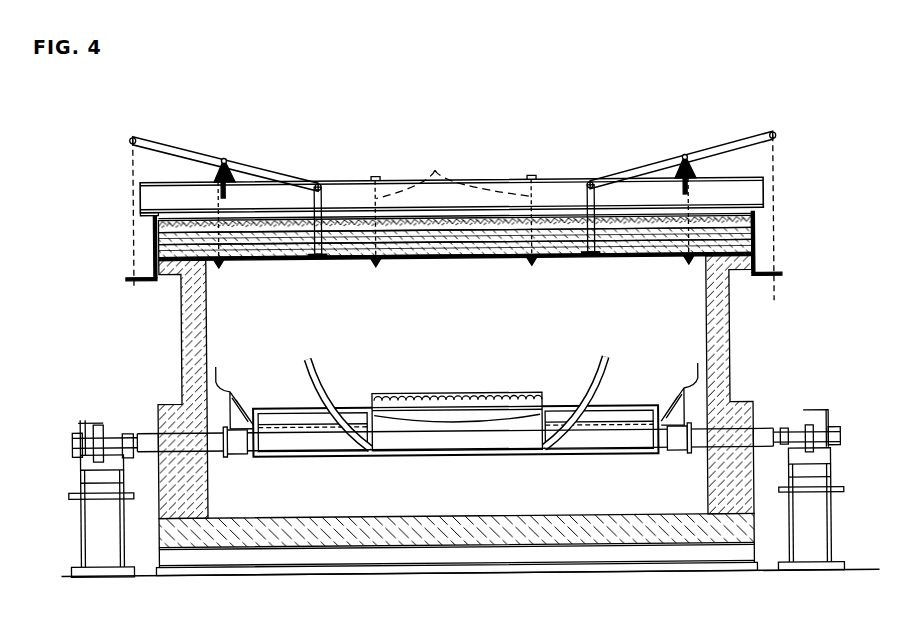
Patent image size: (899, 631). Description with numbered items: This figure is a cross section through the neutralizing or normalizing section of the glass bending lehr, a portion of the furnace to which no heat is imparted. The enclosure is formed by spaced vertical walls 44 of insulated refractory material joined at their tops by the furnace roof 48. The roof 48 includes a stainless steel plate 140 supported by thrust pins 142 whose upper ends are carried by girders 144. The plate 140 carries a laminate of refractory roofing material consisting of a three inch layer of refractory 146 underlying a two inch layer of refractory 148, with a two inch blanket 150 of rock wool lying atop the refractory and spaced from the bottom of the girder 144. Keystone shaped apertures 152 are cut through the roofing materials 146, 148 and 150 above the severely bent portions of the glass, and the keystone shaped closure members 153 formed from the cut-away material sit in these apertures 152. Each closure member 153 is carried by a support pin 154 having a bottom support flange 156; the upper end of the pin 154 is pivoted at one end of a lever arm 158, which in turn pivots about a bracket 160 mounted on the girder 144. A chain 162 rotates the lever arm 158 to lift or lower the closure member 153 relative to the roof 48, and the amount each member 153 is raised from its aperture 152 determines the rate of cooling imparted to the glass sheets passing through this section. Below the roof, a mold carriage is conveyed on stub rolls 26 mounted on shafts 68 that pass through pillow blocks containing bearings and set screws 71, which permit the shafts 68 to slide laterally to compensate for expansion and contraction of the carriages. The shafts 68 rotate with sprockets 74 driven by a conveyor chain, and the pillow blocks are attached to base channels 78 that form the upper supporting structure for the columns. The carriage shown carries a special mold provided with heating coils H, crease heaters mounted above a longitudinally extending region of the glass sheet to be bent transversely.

The stub rolls 26 is at (238, 452).
The lehr walls 44 is at (205, 495).
The furnace roof 48 is at (760, 220).
The stub roll shafts 68 is at (88, 436).
The set screws 71 is at (76, 439).
The sprockets 74 is at (812, 426).
The base channels 78 is at (830, 452).
The stainless steel plate 140 is at (515, 260).
The thrust pins 142 is at (437, 172).
The girders 144 is at (490, 180).
The layer of refractory 146 is at (428, 255).
The layer of refractory 148 is at (452, 236).
The blanket of rock wool 150 is at (484, 226).
The keystone shaped apertures 152 is at (277, 248).
The keystone shaped closure members 153 is at (290, 219).
The support pin 154 is at (323, 196).
The bottom support flange 156 is at (319, 257).
The lever arm 158 is at (189, 146).
The bracket 160 is at (228, 170).
The chain 162 is at (777, 171).
The heating coils H is at (476, 384).